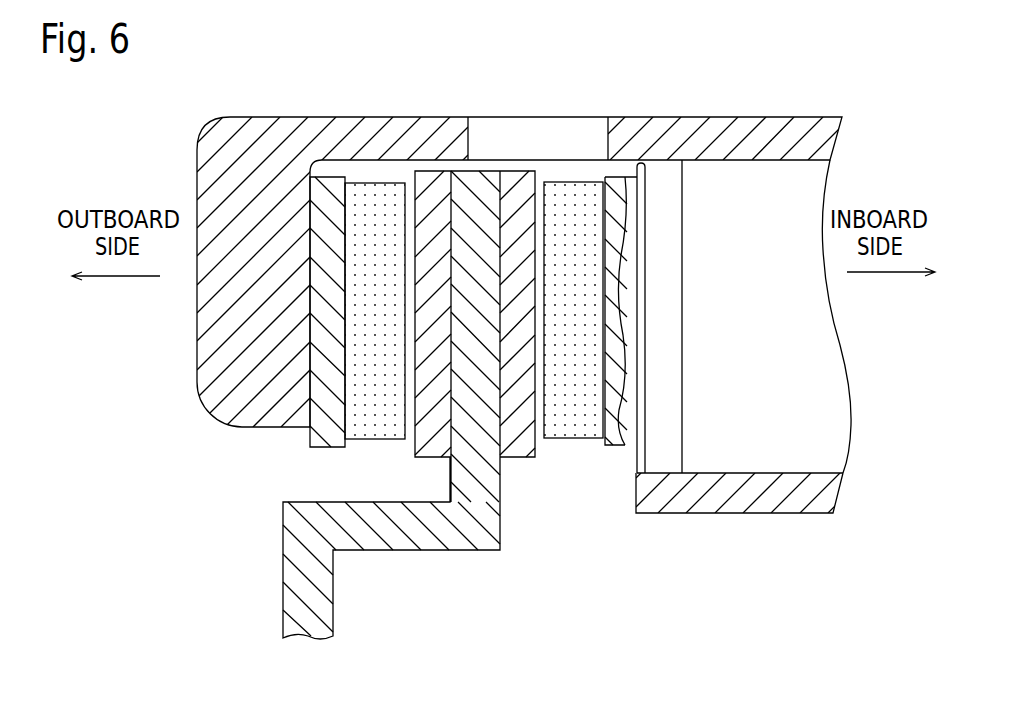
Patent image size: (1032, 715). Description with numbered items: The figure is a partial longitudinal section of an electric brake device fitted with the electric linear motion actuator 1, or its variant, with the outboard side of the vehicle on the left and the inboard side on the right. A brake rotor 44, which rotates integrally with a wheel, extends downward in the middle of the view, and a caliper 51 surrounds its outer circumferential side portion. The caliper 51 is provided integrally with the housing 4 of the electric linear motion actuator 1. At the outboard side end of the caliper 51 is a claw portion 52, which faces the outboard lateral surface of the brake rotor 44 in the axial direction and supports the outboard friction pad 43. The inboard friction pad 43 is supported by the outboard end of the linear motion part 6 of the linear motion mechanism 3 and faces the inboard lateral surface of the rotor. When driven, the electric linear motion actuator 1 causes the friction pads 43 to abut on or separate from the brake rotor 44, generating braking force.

The electric linear motion actuator 1 is at (699, 543).
The linear motion mechanism 3 is at (820, 394).
The housing 4 is at (795, 500).
The linear motion part 6 is at (779, 336).
The friction pad 43 is at (375, 428).
The brake rotor 44 is at (485, 495).
The caliper 51 is at (359, 109).
The claw portion 52 is at (208, 345).